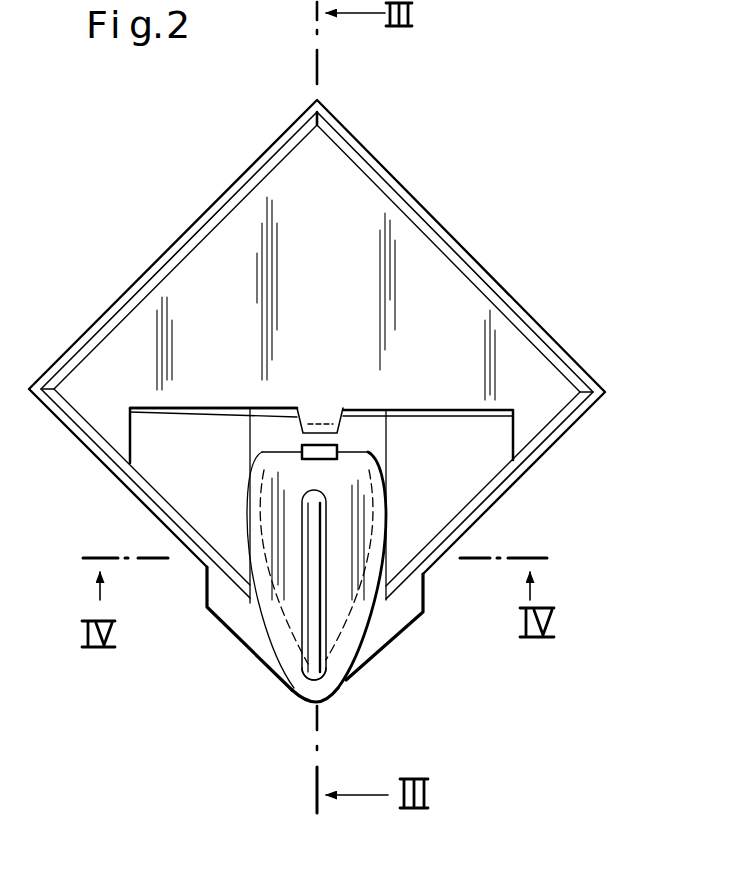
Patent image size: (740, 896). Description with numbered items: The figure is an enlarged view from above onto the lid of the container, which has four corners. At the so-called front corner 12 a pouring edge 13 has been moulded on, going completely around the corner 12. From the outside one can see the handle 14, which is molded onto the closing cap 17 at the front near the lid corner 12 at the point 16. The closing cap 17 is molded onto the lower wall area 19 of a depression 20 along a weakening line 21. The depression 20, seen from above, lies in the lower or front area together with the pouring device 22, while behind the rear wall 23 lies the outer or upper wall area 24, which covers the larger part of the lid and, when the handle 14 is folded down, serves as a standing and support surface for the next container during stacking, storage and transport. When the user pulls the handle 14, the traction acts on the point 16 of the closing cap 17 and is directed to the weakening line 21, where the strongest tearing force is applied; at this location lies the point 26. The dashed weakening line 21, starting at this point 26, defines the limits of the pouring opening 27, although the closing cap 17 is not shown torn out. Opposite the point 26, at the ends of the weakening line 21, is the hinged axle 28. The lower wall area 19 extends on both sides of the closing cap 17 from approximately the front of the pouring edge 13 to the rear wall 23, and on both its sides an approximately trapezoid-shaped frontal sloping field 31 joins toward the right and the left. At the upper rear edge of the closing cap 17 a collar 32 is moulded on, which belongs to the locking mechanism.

The front corner 12 is at (315, 687).
The pouring edge 13 is at (373, 632).
The handle 14 is at (313, 590).
The point 16 is at (327, 687).
The closing cap 17 is at (262, 587).
The lower wall area 19 is at (277, 443).
The depression 20 is at (157, 432).
The weakening line 21 is at (263, 528).
The pouring device 22 is at (257, 509).
The rear wall 23 is at (183, 407).
The upper wall area 24 is at (298, 190).
The point 26 is at (306, 667).
The pouring opening 27 is at (345, 488).
The hinged axle 28 is at (323, 450).
The frontal sloping field 31 is at (202, 453).
The collar 32 is at (303, 433).